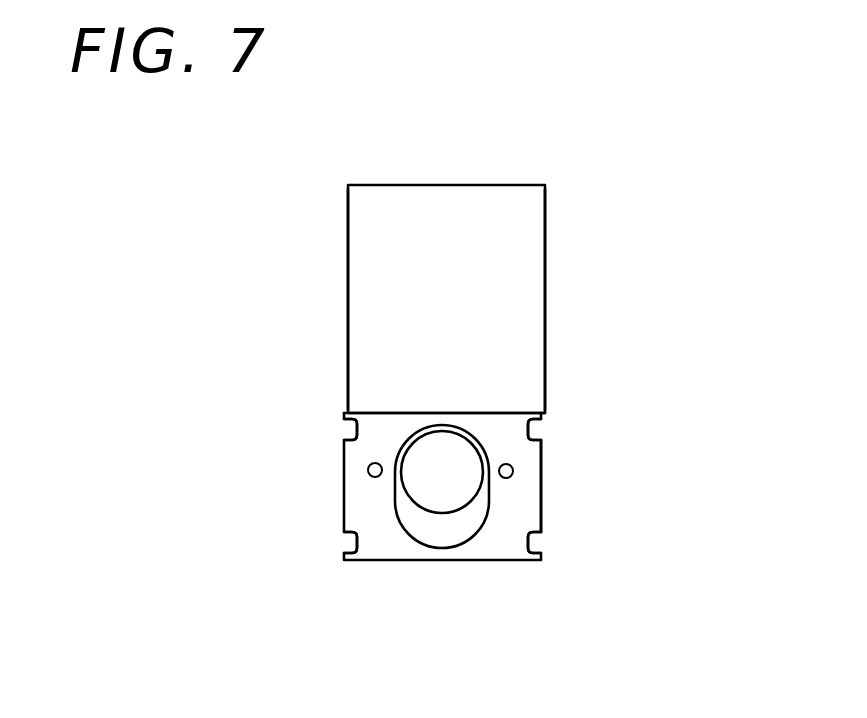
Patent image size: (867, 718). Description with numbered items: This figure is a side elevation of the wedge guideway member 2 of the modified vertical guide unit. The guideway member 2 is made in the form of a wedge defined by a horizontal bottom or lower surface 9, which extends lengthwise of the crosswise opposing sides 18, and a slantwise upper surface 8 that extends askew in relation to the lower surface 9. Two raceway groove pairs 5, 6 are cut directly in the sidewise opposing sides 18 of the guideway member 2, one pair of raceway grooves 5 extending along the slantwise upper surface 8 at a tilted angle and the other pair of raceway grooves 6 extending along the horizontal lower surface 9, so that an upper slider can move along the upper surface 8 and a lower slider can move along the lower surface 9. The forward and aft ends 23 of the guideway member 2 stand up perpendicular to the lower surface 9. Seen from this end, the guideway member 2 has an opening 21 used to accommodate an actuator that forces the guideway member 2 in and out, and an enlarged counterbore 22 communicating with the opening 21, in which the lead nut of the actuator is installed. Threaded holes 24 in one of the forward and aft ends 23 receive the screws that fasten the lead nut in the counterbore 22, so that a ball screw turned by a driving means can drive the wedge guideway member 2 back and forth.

The guideway member 2 is at (458, 364).
The slantwise upper surface 8 is at (404, 230).
The crosswise opposing sides 18 is at (348, 247).
The horizontal lower surface 9 is at (465, 561).
The raceway grooves 5 is at (345, 424).
The raceway grooves 6 is at (344, 536).
The opening 21 is at (408, 450).
The enlarged counterbore 22 is at (398, 498).
The forward and aft ends 23 is at (515, 453).
The threaded holes 24 is at (368, 469).